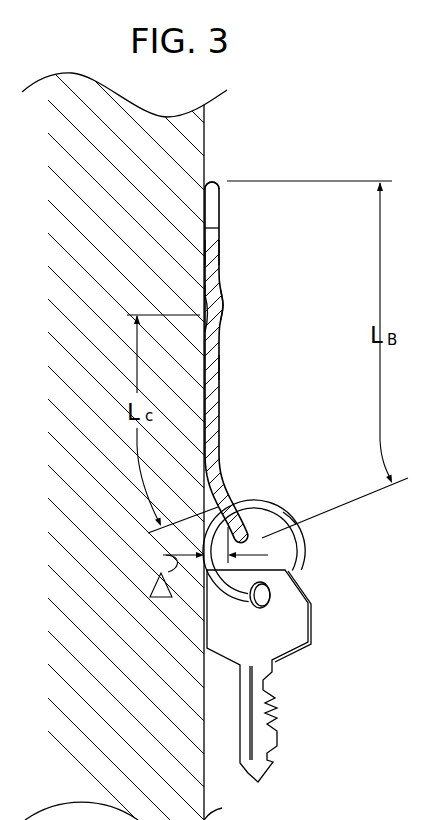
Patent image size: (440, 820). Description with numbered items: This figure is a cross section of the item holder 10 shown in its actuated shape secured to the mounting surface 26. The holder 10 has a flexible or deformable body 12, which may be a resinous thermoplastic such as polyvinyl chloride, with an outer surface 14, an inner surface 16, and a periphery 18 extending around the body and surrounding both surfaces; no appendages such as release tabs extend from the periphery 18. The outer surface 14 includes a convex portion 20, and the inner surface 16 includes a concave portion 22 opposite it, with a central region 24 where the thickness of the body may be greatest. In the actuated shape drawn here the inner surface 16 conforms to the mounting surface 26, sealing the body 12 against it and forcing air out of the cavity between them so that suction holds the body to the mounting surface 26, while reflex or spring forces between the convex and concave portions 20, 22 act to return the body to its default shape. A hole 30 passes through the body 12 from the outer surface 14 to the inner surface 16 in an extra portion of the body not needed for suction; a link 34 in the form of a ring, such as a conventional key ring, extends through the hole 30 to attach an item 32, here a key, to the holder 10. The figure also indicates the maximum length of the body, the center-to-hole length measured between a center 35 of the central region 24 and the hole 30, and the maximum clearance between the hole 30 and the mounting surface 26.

The item holder 10 is at (276, 207).
The flexible body 12 is at (221, 253).
The outer surface 14 is at (232, 369).
The inner surface 16 is at (195, 254).
The periphery 18 is at (208, 181).
The convex portion 20 is at (224, 296).
The concave portion 22 is at (205, 292).
The central region 24 is at (243, 305).
The mounting surface 26 is at (214, 128).
The hole 30 is at (229, 502).
The item 32 is at (219, 652).
The link 34 is at (283, 512).
The center 35 is at (224, 316).